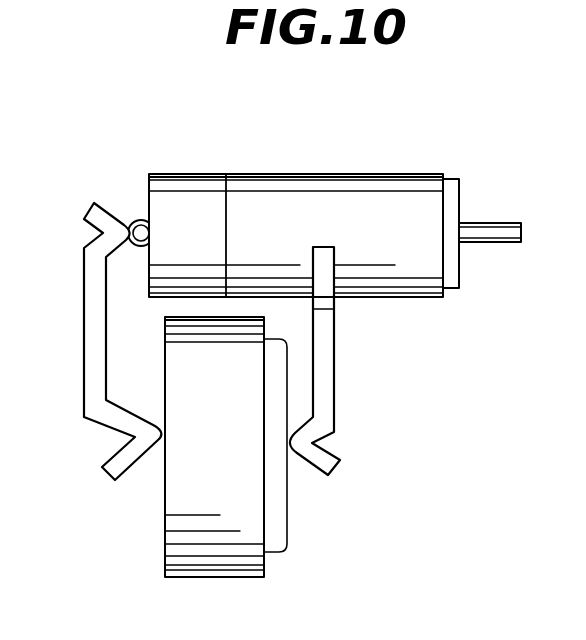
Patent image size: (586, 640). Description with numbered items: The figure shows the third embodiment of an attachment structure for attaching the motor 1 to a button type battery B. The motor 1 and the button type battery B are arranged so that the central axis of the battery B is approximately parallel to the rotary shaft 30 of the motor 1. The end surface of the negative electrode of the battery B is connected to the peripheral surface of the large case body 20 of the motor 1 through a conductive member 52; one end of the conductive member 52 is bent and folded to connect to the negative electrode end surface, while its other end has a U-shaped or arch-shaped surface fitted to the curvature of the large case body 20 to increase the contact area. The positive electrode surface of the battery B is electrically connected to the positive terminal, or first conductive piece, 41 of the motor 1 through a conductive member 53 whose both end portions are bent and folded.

The motor 1 is at (335, 188).
The large case body 20 is at (392, 203).
The rotary shaft 30 is at (495, 235).
The positive terminal (first conductive piece) 41 is at (140, 220).
The conductive member 52 is at (336, 380).
The conductive member 53 is at (92, 349).
The button type battery B is at (166, 547).